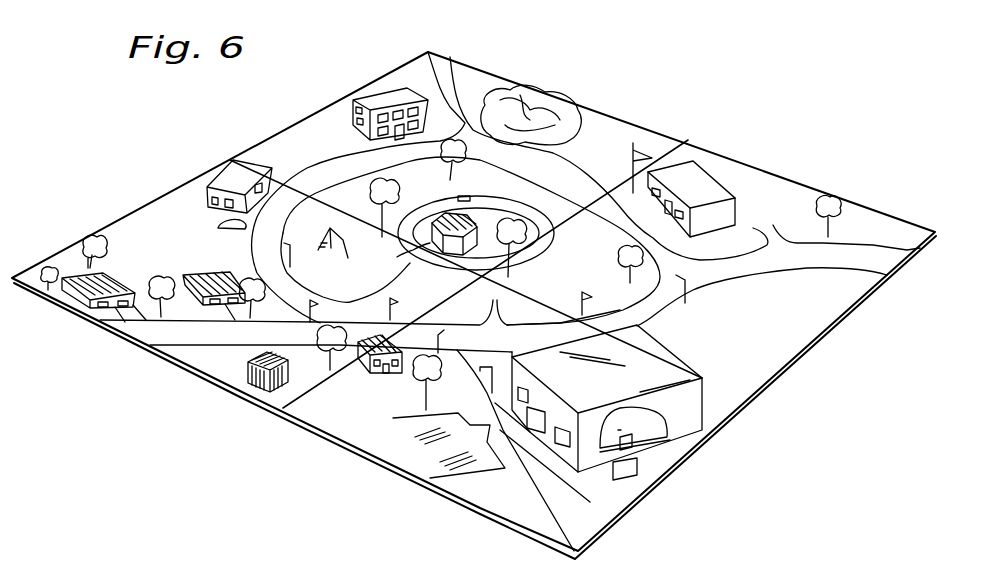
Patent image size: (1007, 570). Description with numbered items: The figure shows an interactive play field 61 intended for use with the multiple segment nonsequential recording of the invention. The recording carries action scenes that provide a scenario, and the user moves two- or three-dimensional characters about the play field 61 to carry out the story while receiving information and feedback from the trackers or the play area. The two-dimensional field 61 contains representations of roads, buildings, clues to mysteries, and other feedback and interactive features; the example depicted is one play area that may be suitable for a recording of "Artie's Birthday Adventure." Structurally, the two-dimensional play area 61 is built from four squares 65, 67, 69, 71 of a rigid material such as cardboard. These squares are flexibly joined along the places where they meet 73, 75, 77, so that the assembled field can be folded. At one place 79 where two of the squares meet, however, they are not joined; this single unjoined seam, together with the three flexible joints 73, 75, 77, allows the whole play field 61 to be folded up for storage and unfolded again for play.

The play field 61 is at (664, 104).
The square 65 is at (137, 220).
The square 67 is at (373, 441).
The square 69 is at (810, 318).
The square 71 is at (478, 85).
The flexible joint 73 is at (295, 396).
The flexible joint 75 is at (729, 383).
The flexible joint 77 is at (688, 140).
The unjoined place 79 is at (295, 180).